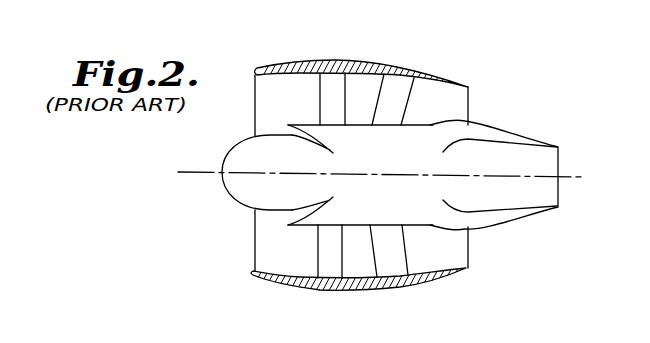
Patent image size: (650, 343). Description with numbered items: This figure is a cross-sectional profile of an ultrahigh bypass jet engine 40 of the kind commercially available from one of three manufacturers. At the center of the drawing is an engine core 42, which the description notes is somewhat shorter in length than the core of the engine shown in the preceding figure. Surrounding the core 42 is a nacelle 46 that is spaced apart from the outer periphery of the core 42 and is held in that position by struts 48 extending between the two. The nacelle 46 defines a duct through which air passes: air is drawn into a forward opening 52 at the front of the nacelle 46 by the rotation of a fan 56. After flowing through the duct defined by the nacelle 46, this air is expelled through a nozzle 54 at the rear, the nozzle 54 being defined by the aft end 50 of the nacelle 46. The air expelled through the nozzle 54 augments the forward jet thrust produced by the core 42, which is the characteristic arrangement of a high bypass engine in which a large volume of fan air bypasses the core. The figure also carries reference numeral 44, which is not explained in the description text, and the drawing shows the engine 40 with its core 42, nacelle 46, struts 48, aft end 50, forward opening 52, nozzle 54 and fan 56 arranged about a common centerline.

The ultrahigh bypass jet engine 40 is at (226, 213).
The engine core 42 is at (237, 148).
The core engine exhaust nozzle 44 is at (544, 138).
The nacelle 46 is at (357, 63).
The struts 48 is at (397, 87).
The aft end of nacelle 50 is at (450, 78).
The forward opening 52 is at (262, 104).
The nozzle 54 is at (474, 101).
The fan 56 is at (320, 93).